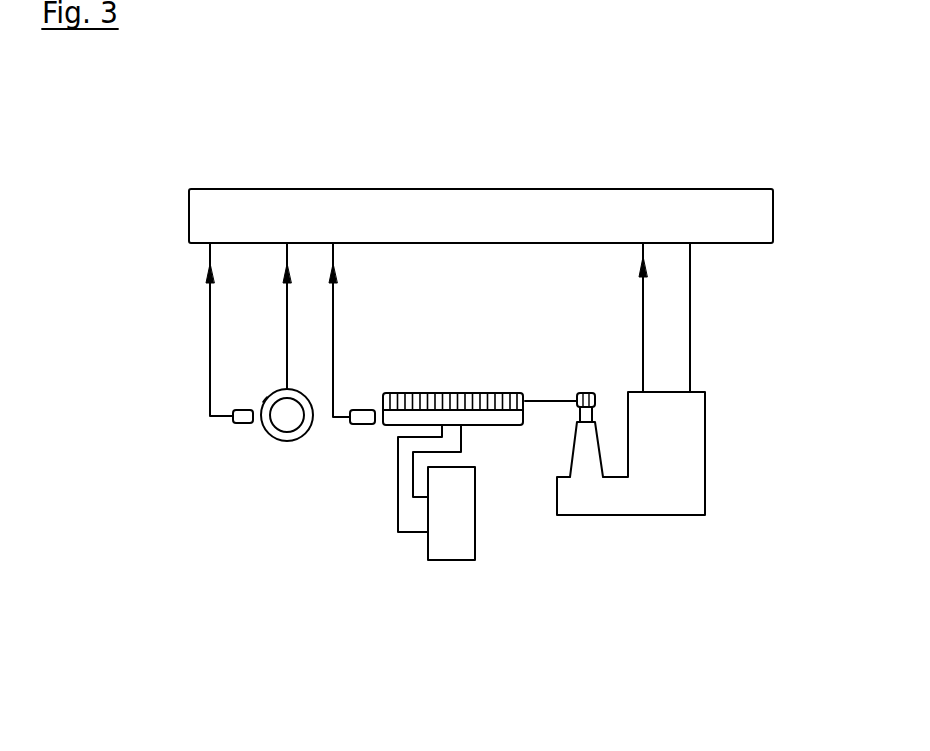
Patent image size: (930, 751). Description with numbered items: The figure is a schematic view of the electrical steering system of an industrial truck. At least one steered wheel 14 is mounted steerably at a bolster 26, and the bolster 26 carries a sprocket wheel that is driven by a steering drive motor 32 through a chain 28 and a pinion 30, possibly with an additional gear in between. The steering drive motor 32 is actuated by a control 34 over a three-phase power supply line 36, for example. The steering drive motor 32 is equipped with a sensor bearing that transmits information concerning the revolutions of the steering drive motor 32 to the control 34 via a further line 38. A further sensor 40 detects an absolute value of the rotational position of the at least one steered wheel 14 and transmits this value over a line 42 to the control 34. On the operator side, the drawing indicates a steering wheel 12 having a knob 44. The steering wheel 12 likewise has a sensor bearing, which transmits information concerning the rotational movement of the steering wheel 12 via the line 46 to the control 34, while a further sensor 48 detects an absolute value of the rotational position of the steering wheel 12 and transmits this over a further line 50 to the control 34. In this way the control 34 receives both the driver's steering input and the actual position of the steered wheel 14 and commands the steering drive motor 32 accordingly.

The steering wheel 12 is at (281, 441).
The steered wheel 14 is at (467, 543).
The bolster 26 is at (393, 392).
The chain 28 is at (552, 405).
The pinion 30 is at (583, 392).
The steering drive motor 32 is at (697, 462).
The control 34 is at (449, 200).
The three-phase power supply line 36 is at (690, 312).
The further line 38 is at (643, 310).
The further sensor 40 is at (358, 428).
The line 42 is at (333, 323).
The knob 44 is at (263, 402).
The line 46 is at (287, 313).
The further sensor 48 is at (240, 426).
The further line 50 is at (210, 333).